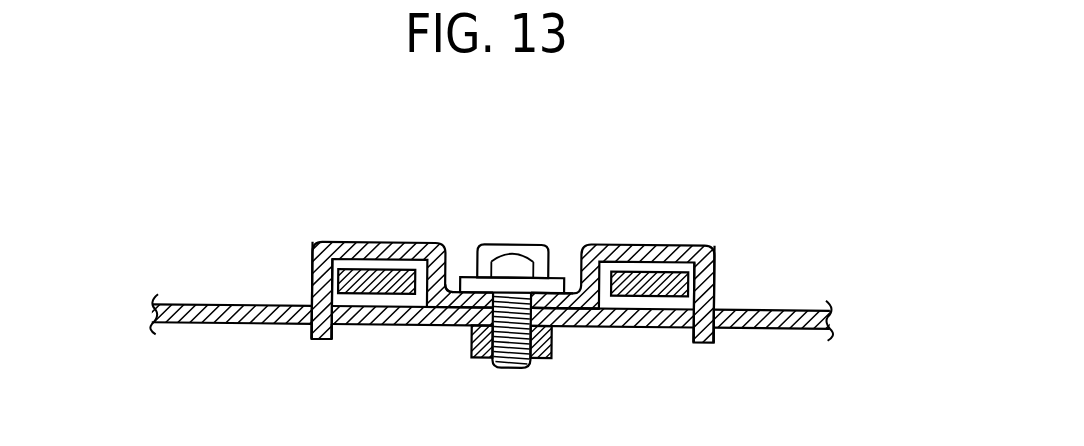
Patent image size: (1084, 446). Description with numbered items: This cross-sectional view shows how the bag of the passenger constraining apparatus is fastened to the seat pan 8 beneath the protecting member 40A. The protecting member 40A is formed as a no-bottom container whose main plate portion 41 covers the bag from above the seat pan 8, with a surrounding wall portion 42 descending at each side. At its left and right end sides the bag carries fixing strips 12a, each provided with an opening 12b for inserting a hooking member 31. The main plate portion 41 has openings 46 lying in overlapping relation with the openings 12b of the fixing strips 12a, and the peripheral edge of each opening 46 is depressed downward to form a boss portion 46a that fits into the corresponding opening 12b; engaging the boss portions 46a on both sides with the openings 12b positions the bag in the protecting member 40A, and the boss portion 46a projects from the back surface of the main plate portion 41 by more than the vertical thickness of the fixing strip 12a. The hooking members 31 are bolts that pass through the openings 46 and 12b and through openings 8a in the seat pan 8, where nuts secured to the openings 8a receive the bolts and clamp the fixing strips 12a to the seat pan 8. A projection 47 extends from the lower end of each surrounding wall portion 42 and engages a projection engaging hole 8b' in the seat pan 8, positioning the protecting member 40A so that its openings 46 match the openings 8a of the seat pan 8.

The seat pan 8 is at (180, 308).
The openings 8a is at (473, 350).
The projection engaging hole 8b' is at (508, 341).
The fixing strips 12a is at (652, 300).
The openings 12b is at (607, 327).
The hooking members 31 is at (508, 250).
The protecting member 40A is at (314, 230).
The main plate portion 41 is at (675, 245).
The surrounding wall portion 42 is at (312, 262).
The openings 46 is at (547, 275).
The boss portions 46a is at (426, 300).
The projection 47 is at (319, 343).